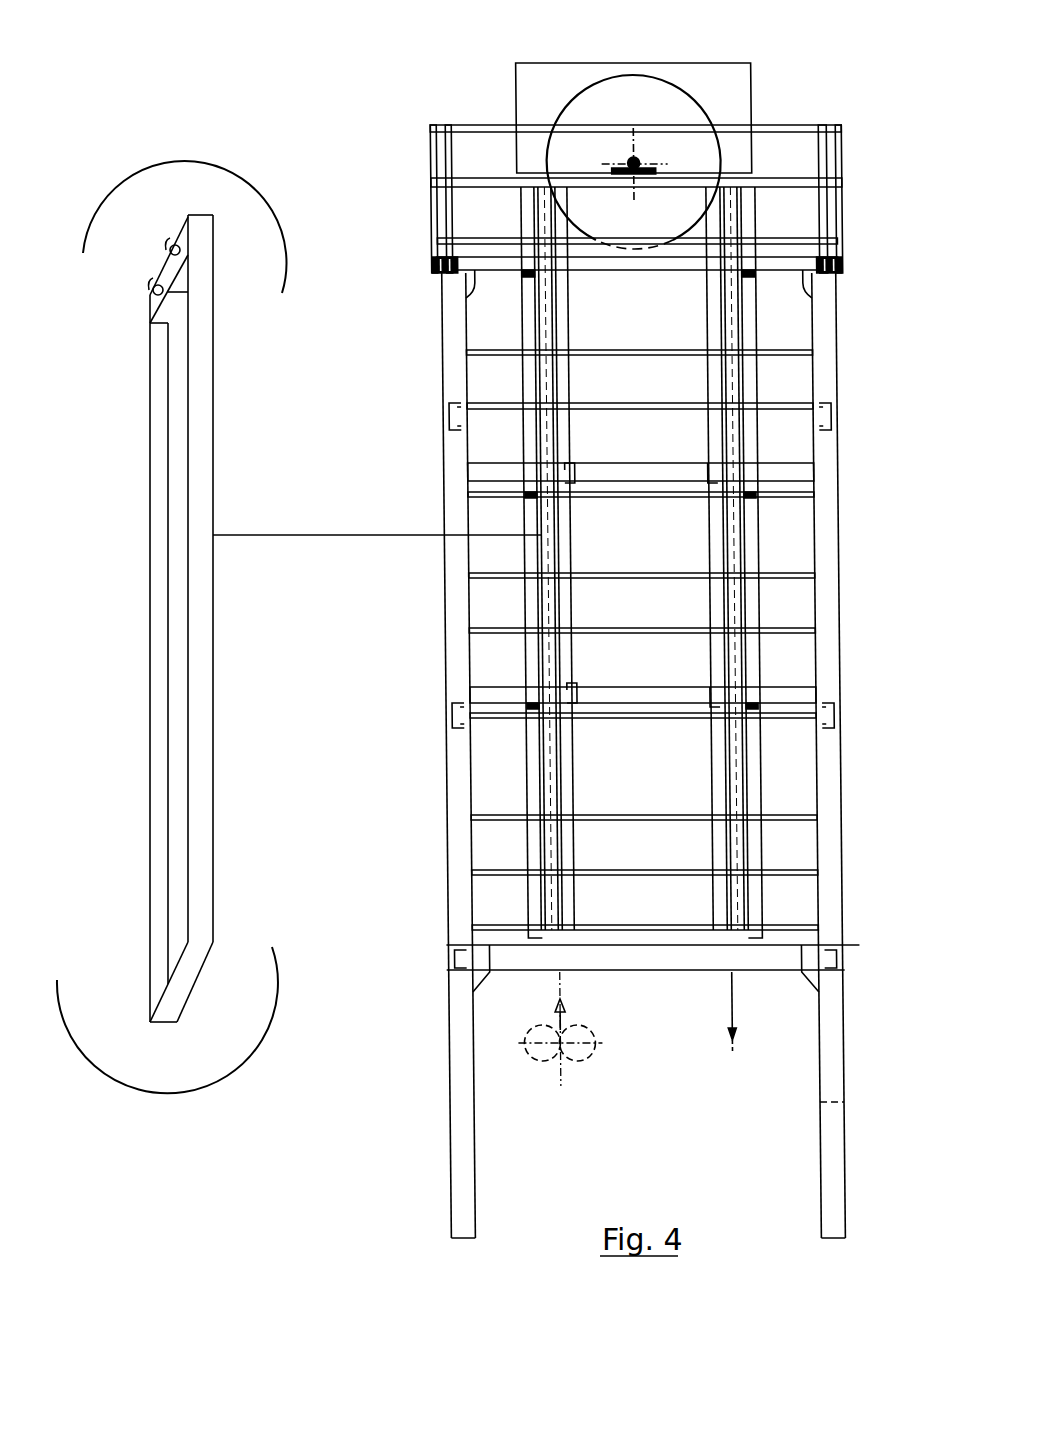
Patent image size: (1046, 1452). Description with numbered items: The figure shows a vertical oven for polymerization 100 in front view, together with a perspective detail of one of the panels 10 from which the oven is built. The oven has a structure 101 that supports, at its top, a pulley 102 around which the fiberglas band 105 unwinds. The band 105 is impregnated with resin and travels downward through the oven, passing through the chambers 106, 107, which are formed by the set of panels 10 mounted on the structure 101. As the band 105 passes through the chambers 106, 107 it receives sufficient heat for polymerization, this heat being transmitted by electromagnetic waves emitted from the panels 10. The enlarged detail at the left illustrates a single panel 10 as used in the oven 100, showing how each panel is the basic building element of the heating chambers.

The panel 10 is at (93, 456).
The oven for polymerization 100 is at (411, 344).
The structure 101 is at (441, 511).
The pulley 102 is at (665, 103).
The fiberglas band 105 is at (560, 987).
The chamber 106 is at (548, 740).
The chamber 107 is at (731, 424).